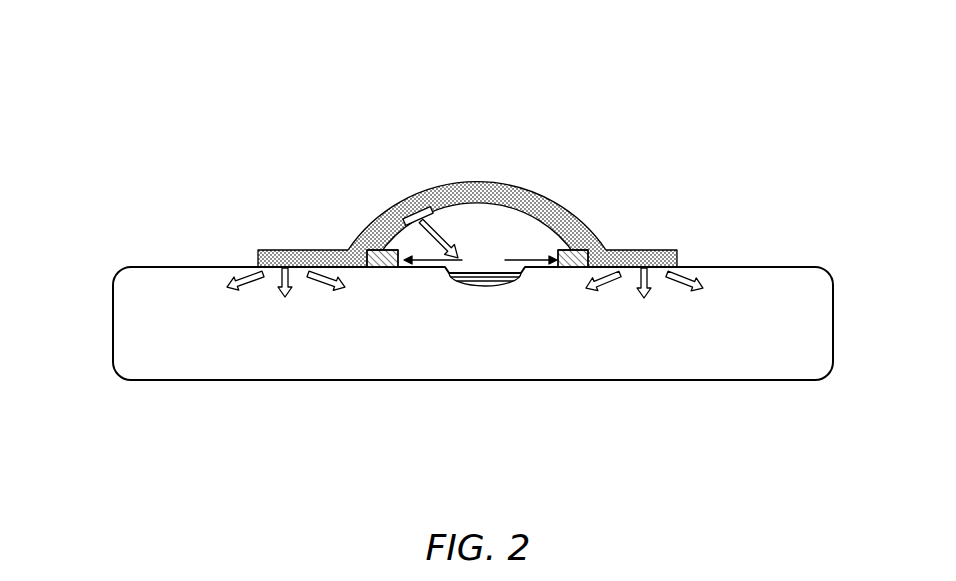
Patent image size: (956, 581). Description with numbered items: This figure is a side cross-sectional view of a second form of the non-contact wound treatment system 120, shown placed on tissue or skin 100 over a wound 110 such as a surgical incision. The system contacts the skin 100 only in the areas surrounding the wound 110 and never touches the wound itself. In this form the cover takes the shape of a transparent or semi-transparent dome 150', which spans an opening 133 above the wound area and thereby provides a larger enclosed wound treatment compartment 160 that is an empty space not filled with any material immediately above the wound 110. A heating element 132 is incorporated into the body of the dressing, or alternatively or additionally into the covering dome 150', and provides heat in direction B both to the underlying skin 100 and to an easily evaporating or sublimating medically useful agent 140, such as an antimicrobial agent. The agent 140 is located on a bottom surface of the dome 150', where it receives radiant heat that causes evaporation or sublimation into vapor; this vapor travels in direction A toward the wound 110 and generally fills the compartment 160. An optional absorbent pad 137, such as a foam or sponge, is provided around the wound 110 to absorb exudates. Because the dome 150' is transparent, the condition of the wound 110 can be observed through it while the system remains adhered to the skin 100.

The tissue or skin 100 is at (113, 322).
The wound 110 is at (493, 287).
The wound treatment system 120 is at (530, 218).
The heating element 132 is at (484, 183).
The opening 133 is at (480, 261).
The absorbent pad 137 is at (388, 247).
The medically useful agent 140 is at (418, 212).
The dome 150' is at (531, 212).
The wound treatment compartment 160 is at (404, 236).
The direction A is at (447, 236).
The direction B is at (285, 302).